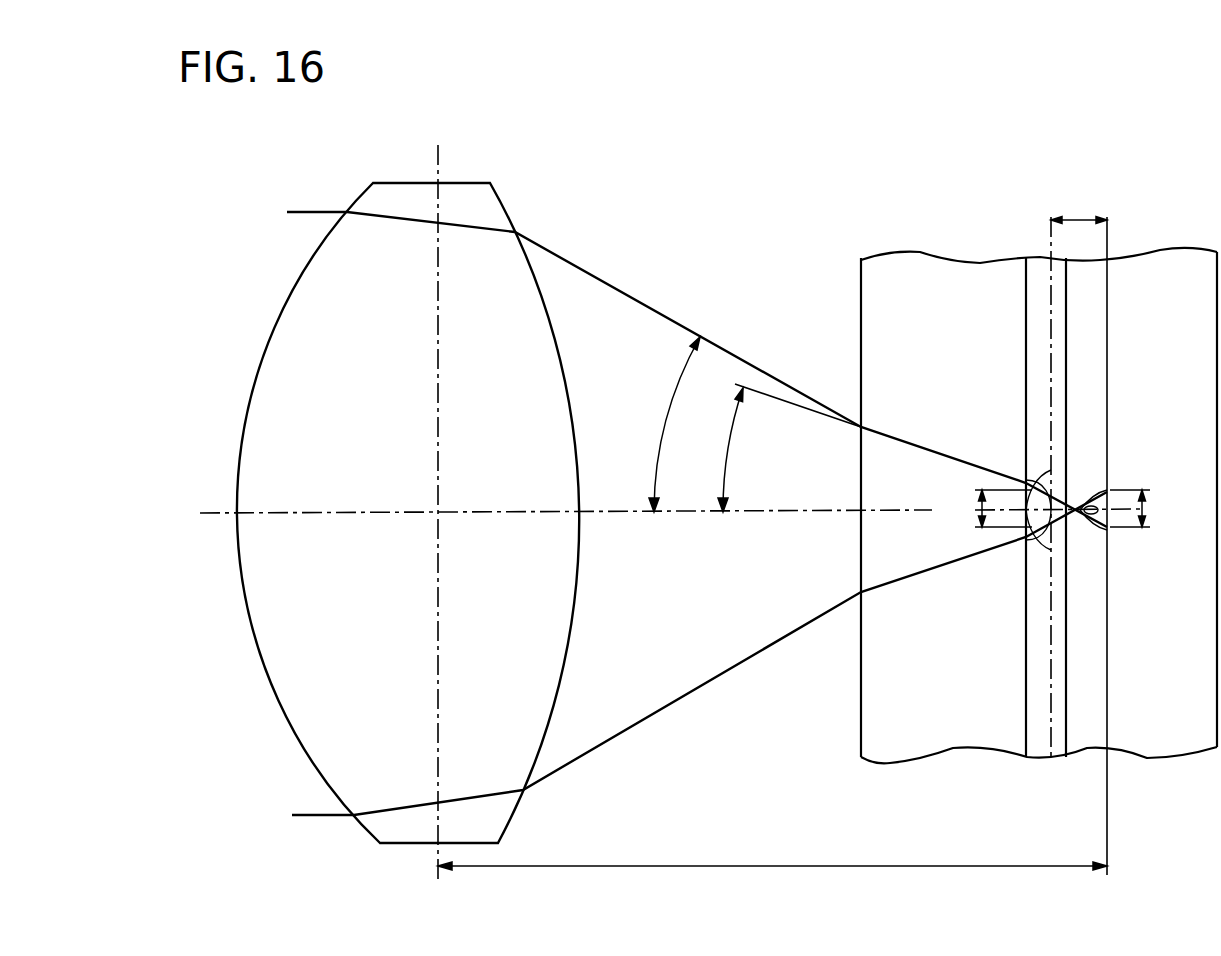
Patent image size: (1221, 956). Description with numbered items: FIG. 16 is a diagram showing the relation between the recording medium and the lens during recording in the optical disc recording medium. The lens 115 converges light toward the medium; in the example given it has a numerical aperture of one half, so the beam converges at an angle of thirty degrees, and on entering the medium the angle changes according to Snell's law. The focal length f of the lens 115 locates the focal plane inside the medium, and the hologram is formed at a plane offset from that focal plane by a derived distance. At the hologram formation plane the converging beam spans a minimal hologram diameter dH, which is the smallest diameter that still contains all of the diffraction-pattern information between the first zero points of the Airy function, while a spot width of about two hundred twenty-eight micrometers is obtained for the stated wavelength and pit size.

The lens 115 is at (492, 203).
The focal length f is at (772, 852).
The minimal diameter of hologram dH is at (1143, 508).